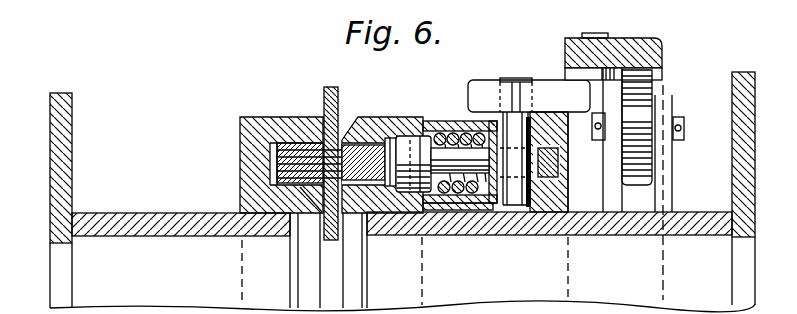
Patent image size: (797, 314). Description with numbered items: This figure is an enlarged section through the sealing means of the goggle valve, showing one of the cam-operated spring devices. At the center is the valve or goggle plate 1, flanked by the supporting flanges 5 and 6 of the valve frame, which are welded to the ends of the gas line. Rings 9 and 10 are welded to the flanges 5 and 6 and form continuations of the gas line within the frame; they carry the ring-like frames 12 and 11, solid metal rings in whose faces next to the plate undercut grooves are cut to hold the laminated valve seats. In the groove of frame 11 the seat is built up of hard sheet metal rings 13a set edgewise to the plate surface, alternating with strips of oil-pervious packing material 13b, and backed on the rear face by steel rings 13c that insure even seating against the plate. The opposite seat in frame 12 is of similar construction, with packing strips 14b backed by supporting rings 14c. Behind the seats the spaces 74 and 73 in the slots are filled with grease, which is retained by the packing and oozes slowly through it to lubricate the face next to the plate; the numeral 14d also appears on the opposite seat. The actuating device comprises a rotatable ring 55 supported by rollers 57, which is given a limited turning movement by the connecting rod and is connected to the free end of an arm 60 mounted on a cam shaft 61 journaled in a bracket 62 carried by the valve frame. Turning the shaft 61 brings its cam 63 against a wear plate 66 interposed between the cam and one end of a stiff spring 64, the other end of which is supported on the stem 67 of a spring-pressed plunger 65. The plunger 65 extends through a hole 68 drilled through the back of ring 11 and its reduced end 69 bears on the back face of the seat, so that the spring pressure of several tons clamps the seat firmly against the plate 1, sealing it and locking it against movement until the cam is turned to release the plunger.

The valve or goggle plate 1 is at (324, 96).
The supporting flange 5 is at (62, 163).
The supporting flange 6 is at (745, 170).
The ring 9 is at (170, 228).
The ring 10 is at (497, 225).
The ring-like frame 11 is at (420, 213).
The ring-like frame 12 is at (252, 192).
The sheet metal rings 13a is at (360, 143).
The strips of oil-pervious packing material 13b is at (349, 140).
The steel rings 13c is at (376, 215).
The packing strips 14b is at (296, 140).
The supporting rings 14c is at (273, 172).
The thread 14d is at (310, 213).
The rotatable ring 55 is at (624, 52).
The rollers 57 is at (645, 78).
The arm 60 is at (536, 88).
The cam shaft 61 is at (566, 188).
The bracket 62 is at (550, 213).
The cam 63 is at (559, 156).
The spring 64 is at (458, 115).
The spring-pressed plunger 65 is at (424, 140).
The wear plate 66 is at (506, 94).
The stem 67 is at (440, 133).
The hole 68 is at (406, 145).
The reduced end 69 is at (397, 215).
The space 73 is at (388, 140).
The space 74 is at (272, 155).